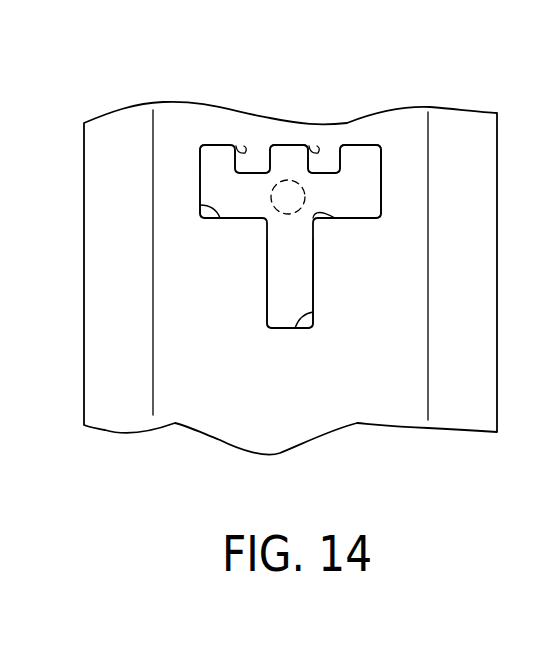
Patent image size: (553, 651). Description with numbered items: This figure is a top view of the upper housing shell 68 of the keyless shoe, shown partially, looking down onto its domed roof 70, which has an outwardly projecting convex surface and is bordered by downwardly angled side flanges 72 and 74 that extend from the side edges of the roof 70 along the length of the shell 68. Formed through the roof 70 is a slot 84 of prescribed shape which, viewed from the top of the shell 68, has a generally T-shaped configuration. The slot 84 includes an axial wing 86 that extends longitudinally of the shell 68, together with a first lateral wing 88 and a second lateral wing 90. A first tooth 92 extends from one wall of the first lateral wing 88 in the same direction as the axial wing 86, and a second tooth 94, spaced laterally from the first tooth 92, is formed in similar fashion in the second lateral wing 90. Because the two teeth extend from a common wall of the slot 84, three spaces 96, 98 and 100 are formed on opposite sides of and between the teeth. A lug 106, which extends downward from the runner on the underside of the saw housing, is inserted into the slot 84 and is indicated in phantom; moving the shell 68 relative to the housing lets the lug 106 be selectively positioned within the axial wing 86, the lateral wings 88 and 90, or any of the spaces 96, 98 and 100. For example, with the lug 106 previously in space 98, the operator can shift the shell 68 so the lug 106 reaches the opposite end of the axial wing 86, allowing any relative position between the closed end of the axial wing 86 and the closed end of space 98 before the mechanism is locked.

The upper housing shell 68 is at (104, 118).
The domed roof 70 is at (362, 405).
The side flange 72 is at (115, 290).
The side flange 74 is at (488, 241).
The slot 84 is at (288, 260).
The axial wing 86 is at (311, 312).
The first lateral wing 88 is at (222, 218).
The second lateral wing 90 is at (367, 218).
The first tooth 92 is at (252, 166).
The second tooth 94 is at (327, 163).
The space 96 is at (200, 145).
The space 98 is at (272, 160).
The space 100 is at (381, 166).
The lug 106 is at (296, 178).